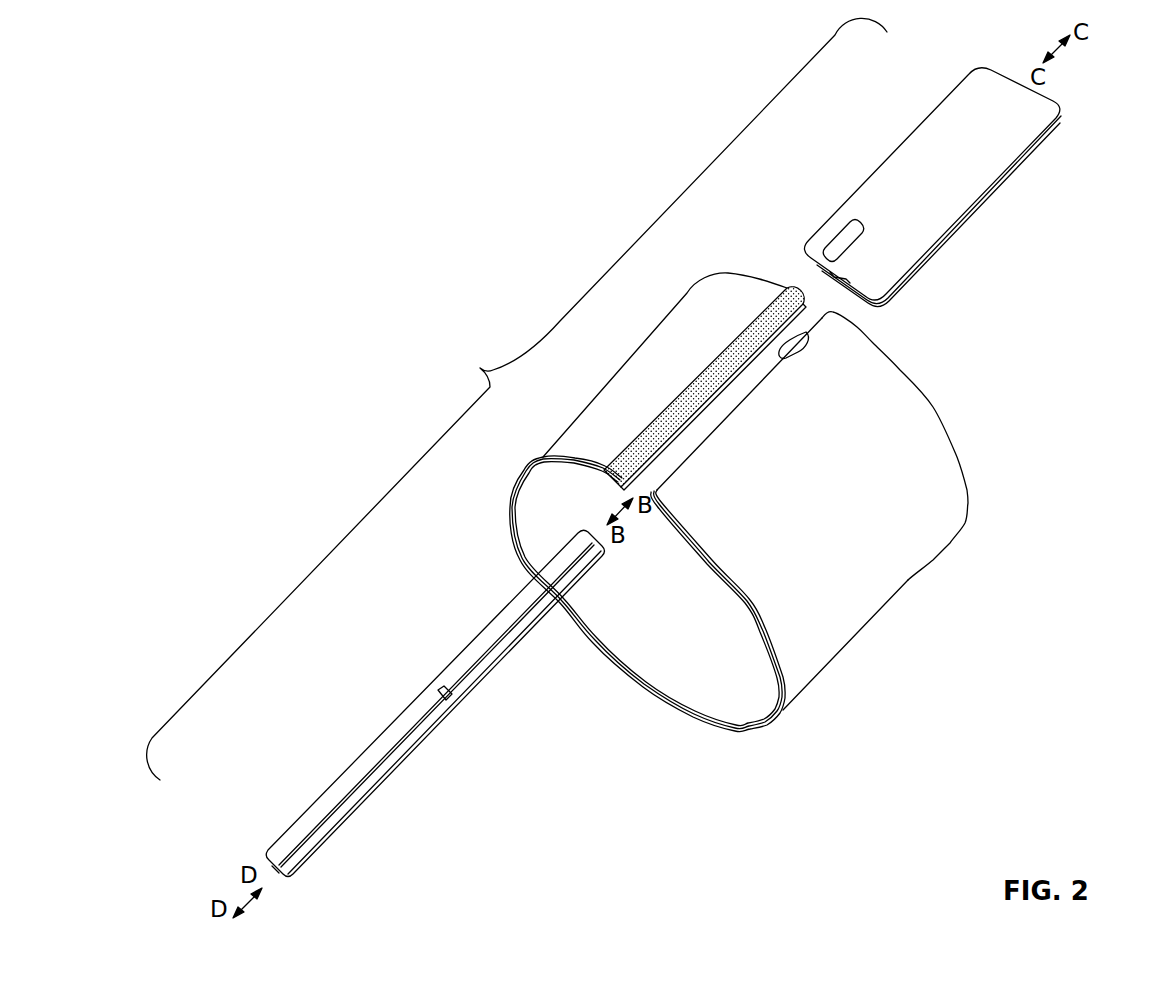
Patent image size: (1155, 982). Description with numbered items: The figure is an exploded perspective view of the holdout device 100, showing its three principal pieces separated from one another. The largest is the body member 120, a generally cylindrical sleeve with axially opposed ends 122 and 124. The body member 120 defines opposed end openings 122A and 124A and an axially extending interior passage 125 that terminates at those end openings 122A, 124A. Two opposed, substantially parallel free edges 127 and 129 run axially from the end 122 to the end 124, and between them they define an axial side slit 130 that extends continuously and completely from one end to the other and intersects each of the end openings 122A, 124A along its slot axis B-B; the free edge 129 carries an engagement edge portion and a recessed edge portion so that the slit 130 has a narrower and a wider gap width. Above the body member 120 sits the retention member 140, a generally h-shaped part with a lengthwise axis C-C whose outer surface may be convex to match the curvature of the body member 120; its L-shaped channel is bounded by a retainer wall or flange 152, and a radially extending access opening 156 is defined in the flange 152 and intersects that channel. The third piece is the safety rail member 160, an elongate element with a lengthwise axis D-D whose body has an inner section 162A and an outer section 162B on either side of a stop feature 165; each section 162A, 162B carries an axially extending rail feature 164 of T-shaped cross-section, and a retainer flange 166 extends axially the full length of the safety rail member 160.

The holdout device 100 is at (462, 262).
The body member 120 is at (786, 509).
The end 122 is at (618, 678).
The end opening 122A is at (700, 683).
The end 124 is at (968, 507).
The end opening 124A is at (967, 433).
The interior passage 125 is at (718, 636).
The free edge 127 is at (808, 333).
The free edge 129 is at (727, 413).
The side slit 130 is at (708, 428).
The retention member 140 is at (907, 187).
The retainer wall or flange 152 is at (905, 192).
The access opening 156 is at (843, 232).
The safety rail member 160 is at (414, 703).
The inner section 162A is at (482, 625).
The outer section 162B is at (342, 768).
The rail feature 164 is at (387, 753).
The stop feature 165 is at (453, 699).
The retainer flange 166 is at (270, 845).